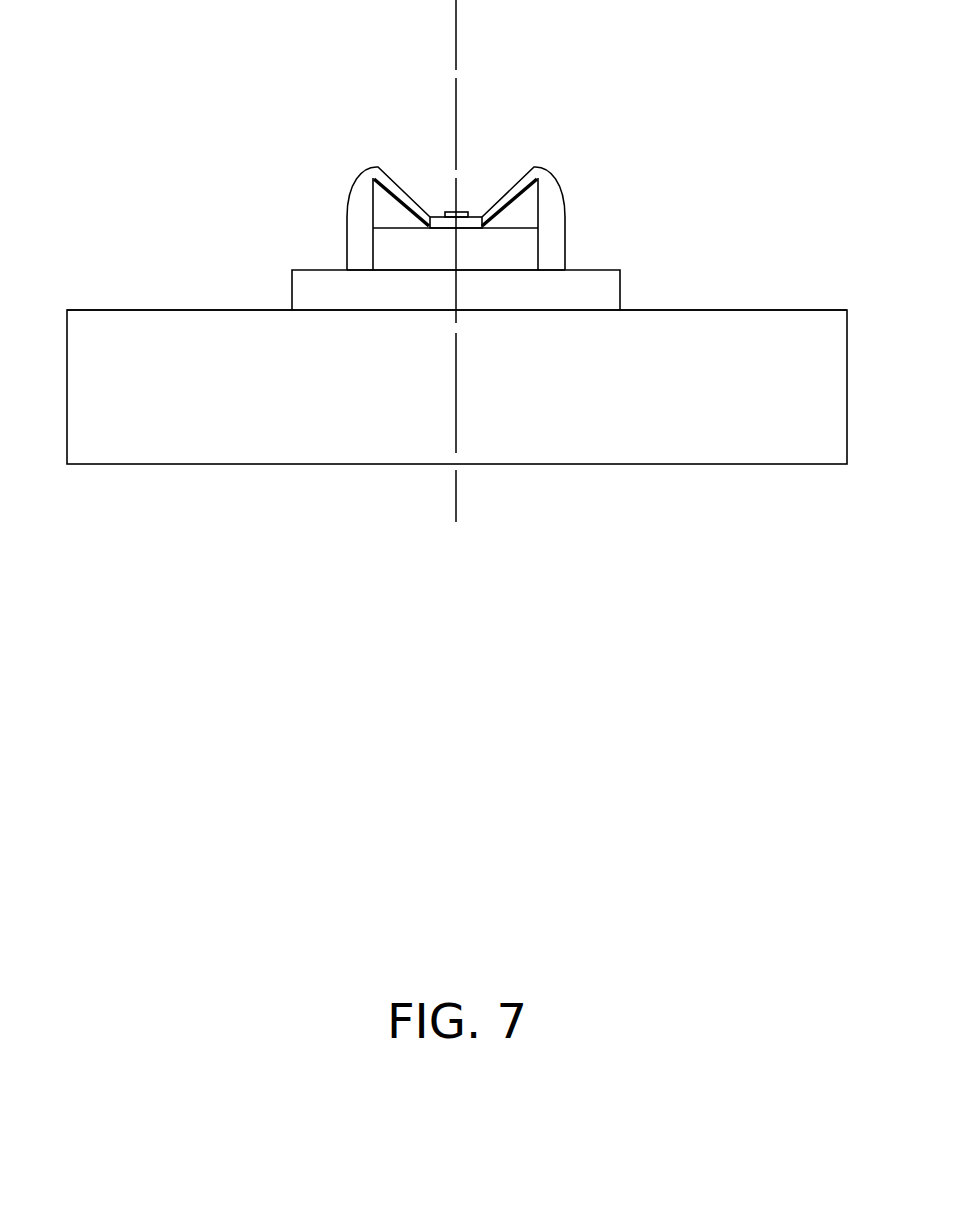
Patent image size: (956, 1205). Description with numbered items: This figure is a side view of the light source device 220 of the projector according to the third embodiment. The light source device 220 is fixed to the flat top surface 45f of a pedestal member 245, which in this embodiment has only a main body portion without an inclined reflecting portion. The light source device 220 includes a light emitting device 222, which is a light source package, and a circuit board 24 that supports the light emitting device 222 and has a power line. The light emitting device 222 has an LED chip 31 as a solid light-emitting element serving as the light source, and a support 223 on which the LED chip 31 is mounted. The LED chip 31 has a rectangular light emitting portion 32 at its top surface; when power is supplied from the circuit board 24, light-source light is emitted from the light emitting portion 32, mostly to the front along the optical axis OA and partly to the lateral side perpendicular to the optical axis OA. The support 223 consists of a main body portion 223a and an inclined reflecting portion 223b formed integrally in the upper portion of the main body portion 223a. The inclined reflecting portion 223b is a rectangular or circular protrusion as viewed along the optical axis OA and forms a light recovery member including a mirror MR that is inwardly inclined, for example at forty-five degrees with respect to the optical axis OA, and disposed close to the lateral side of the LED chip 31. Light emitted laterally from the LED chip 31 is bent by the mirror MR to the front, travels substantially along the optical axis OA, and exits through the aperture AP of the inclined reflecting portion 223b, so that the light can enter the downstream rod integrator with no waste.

The optical axis OA is at (456, 4).
The aperture AP is at (478, 160).
The mirror MR is at (385, 204).
The light source device 220 is at (490, 160).
The light emitting device 222 is at (452, 153).
The support 223 is at (400, 243).
The main body portion 223a is at (520, 247).
The inclined reflecting portion 223b is at (368, 182).
The LED chip 31 is at (478, 212).
The light emitting portion 32 is at (442, 211).
The circuit board 24 is at (597, 279).
The pedestal member 245 is at (221, 300).
The flat top surface 45f is at (792, 309).